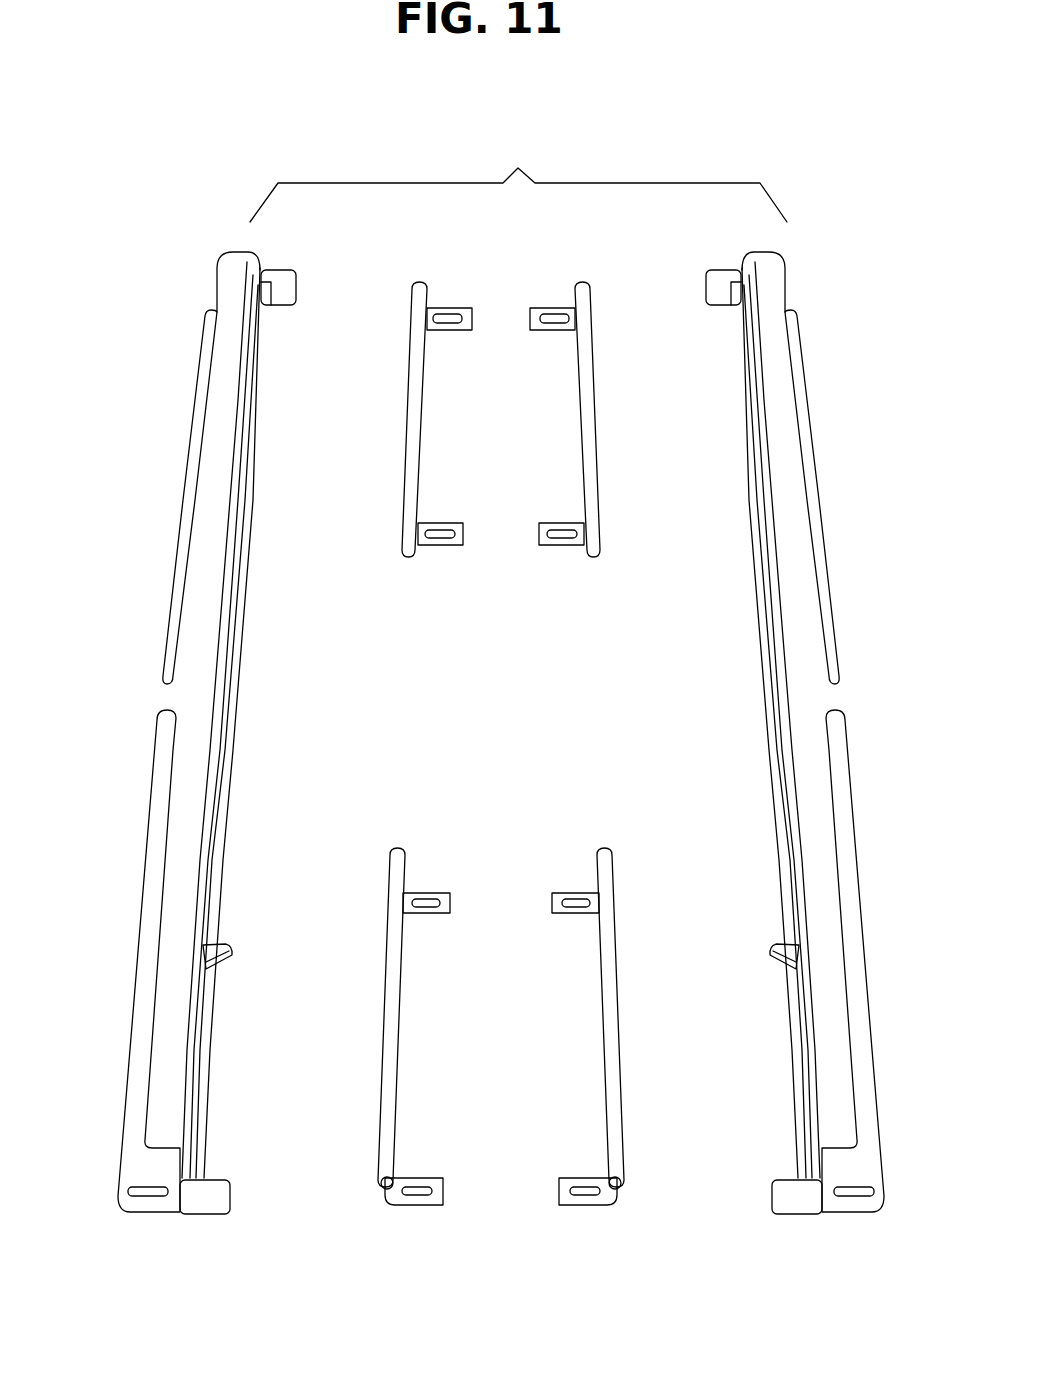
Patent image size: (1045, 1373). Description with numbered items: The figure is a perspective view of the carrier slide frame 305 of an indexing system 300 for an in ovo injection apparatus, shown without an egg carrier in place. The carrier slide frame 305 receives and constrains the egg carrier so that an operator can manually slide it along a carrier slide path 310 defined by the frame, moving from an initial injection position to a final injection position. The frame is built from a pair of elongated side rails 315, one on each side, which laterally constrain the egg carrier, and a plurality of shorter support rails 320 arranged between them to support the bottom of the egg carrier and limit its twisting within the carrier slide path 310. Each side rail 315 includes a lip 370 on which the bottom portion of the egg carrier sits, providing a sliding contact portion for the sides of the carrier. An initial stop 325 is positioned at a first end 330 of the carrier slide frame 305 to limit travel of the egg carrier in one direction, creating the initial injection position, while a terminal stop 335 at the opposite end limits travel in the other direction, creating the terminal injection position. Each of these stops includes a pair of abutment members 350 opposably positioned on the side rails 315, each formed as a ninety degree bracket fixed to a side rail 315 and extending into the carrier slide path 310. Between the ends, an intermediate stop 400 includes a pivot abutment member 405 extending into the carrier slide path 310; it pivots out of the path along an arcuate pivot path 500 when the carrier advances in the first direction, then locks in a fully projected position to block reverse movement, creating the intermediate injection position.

The indexing system 300 is at (866, 258).
The carrier slide frame 305 is at (518, 179).
The carrier slide path 310 is at (332, 670).
The side rail 315 is at (190, 797).
The support rail 320 is at (417, 415).
The initial stop 325 is at (812, 1230).
The first end 330 is at (372, 1228).
The terminal stop 335 is at (292, 250).
The abutment member 350 is at (281, 296).
The lip 370 is at (254, 505).
The intermediate stop 400 is at (742, 947).
The pivot abutment member 405 is at (228, 960).
The arcuate pivot path 500 is at (232, 898).